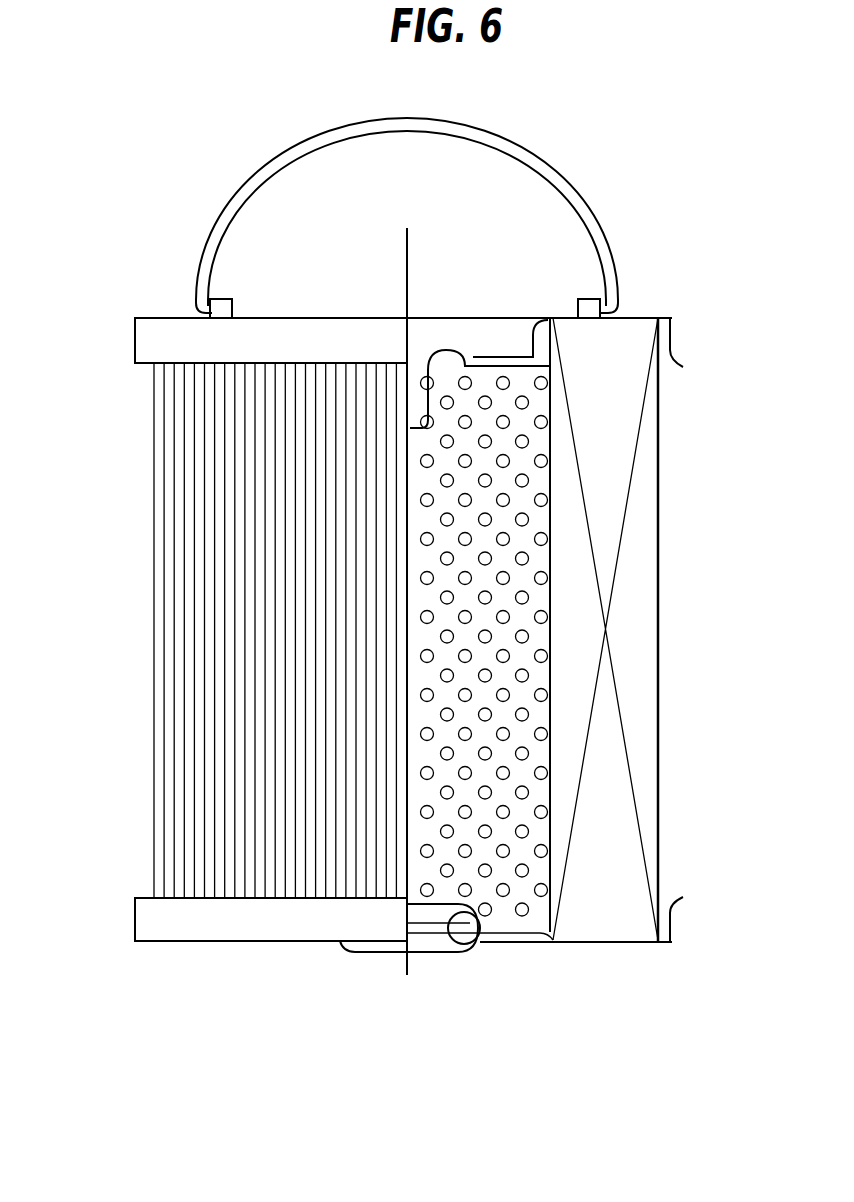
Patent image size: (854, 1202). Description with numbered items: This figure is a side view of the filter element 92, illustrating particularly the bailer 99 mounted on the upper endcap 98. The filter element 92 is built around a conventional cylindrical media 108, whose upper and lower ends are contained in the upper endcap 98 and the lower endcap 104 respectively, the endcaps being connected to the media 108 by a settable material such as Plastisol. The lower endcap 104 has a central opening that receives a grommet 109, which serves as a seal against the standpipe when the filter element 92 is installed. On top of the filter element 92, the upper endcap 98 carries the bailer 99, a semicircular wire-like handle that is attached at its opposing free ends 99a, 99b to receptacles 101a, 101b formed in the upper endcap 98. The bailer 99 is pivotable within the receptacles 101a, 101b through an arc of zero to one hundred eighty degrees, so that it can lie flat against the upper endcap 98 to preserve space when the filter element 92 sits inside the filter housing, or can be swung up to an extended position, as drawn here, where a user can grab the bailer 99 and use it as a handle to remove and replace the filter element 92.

The filter element 92 is at (75, 547).
The upper endcap 98 is at (648, 318).
The bailer 99 is at (572, 183).
The free end of the bailer 99a is at (234, 306).
The free end of the bailer 99b is at (577, 308).
The receptacle 101a is at (222, 298).
The receptacle 101b is at (588, 300).
The lower endcap 104 is at (612, 942).
The cylindrical media 108 is at (635, 533).
The grommet 109 is at (433, 942).